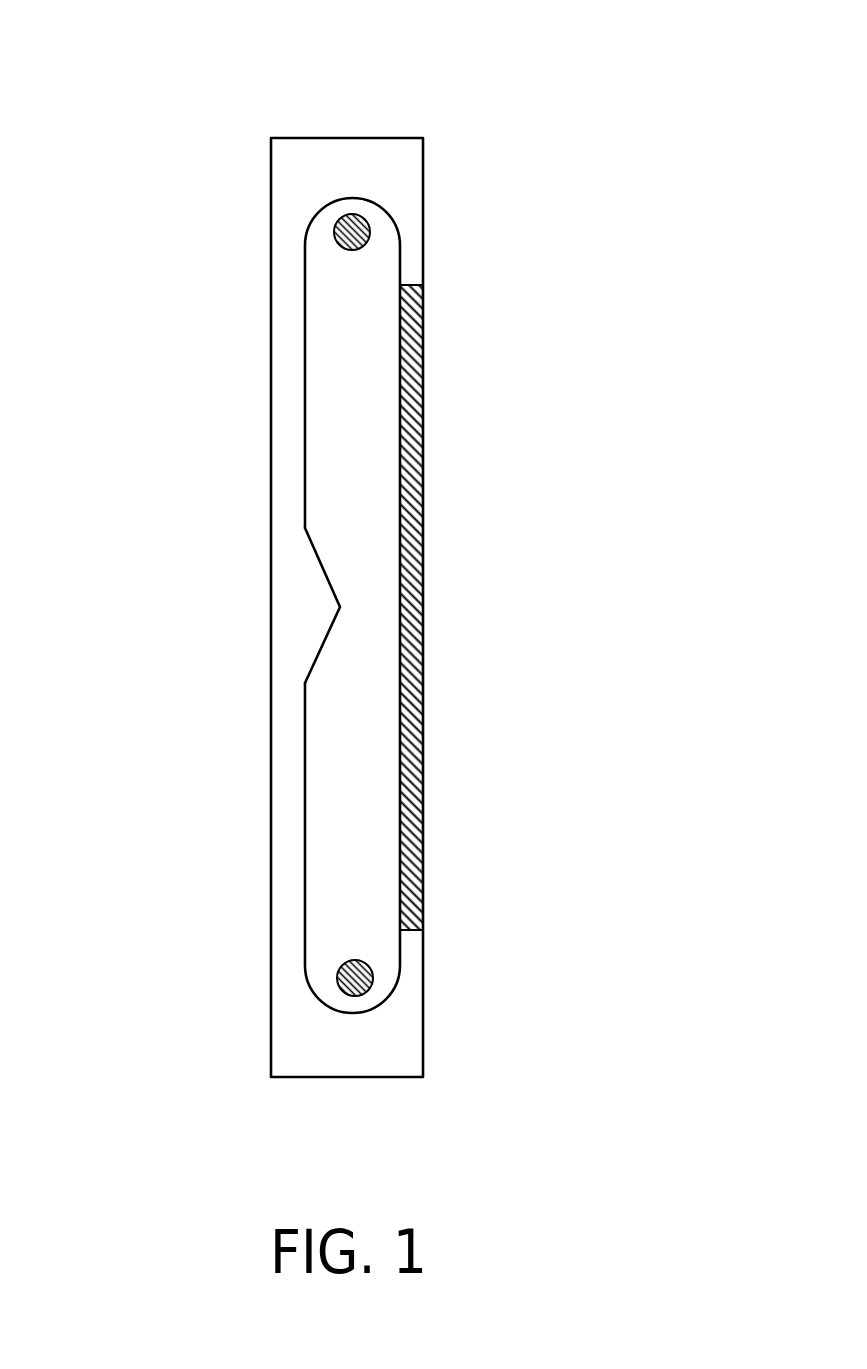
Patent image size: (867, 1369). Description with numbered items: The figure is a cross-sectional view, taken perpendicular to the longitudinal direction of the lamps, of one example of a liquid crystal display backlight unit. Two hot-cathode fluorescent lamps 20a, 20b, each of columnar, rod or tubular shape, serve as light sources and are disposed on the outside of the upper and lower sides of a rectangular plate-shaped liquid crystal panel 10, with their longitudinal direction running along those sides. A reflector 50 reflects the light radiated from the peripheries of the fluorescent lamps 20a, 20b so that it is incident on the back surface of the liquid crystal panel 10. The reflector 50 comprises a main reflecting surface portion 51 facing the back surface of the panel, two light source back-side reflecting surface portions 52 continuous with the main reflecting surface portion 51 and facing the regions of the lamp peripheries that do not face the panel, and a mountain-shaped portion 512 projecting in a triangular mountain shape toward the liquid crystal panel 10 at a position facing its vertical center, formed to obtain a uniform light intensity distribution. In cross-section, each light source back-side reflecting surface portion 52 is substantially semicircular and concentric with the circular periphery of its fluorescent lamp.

The reflector 50 is at (292, 153).
The main reflecting surface portion 51 is at (305, 773).
The mountain-shaped portion 512 is at (330, 648).
The light source back-side reflecting surface portion 52 is at (328, 210).
The liquid crystal panel 10 is at (424, 610).
The hot-cathode fluorescent lamp 20a is at (370, 218).
The hot-cathode fluorescent lamp 20b is at (372, 985).